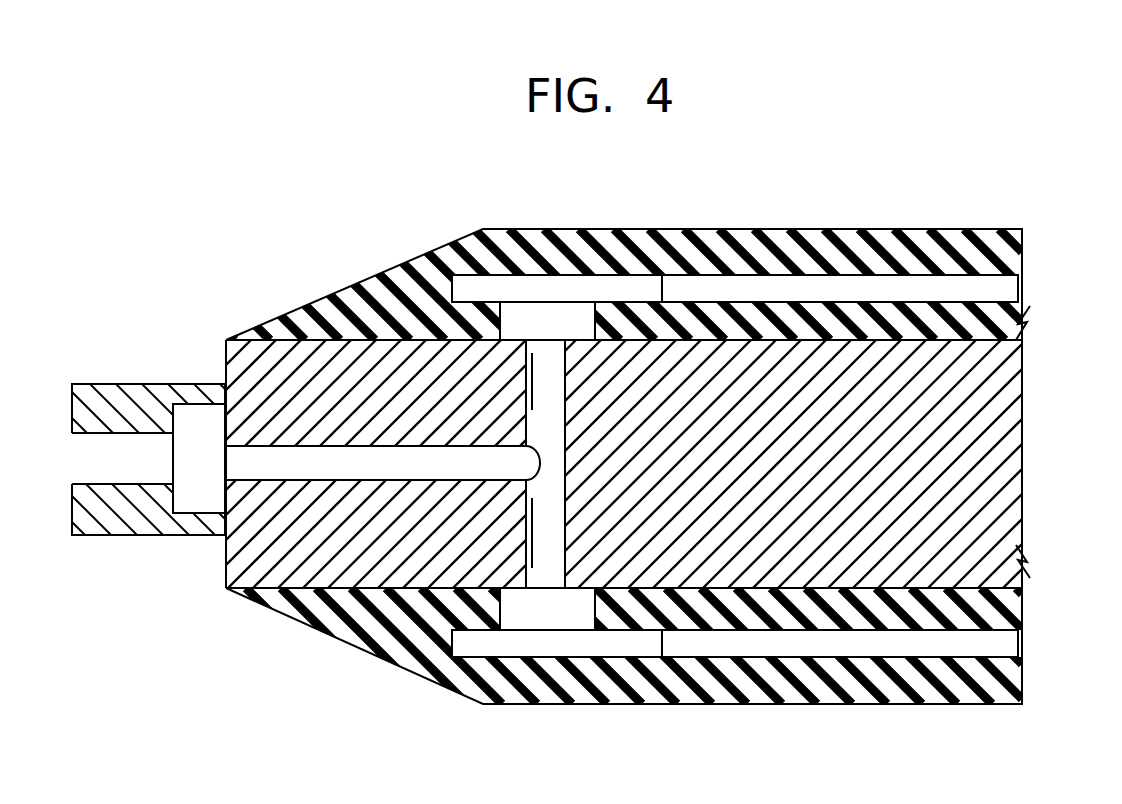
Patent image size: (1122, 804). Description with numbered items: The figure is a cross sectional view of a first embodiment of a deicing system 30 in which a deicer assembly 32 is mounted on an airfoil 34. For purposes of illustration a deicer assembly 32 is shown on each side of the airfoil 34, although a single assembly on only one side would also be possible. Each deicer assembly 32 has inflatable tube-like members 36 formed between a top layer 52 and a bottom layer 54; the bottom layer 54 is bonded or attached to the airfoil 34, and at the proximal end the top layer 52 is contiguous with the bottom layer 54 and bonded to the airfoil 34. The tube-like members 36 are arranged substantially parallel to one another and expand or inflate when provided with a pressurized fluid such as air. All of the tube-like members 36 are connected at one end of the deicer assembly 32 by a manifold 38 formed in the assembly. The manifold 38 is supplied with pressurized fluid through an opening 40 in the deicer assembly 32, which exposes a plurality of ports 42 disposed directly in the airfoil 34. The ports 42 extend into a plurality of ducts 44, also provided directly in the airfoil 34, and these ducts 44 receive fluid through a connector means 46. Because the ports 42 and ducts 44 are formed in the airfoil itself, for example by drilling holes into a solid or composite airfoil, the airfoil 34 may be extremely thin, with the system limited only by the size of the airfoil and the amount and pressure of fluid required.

The deicing system 30 is at (805, 208).
The deicer assembly 32 is at (1032, 232).
The airfoil 34 is at (1008, 448).
The tube-like members 36 is at (840, 287).
The manifold 38 is at (528, 285).
The opening 40 is at (563, 313).
The ports 42 is at (550, 383).
The ducts 44 is at (362, 462).
The connector means 46 is at (127, 527).
The top layer 52 is at (968, 245).
The bottom layer 54 is at (983, 335).